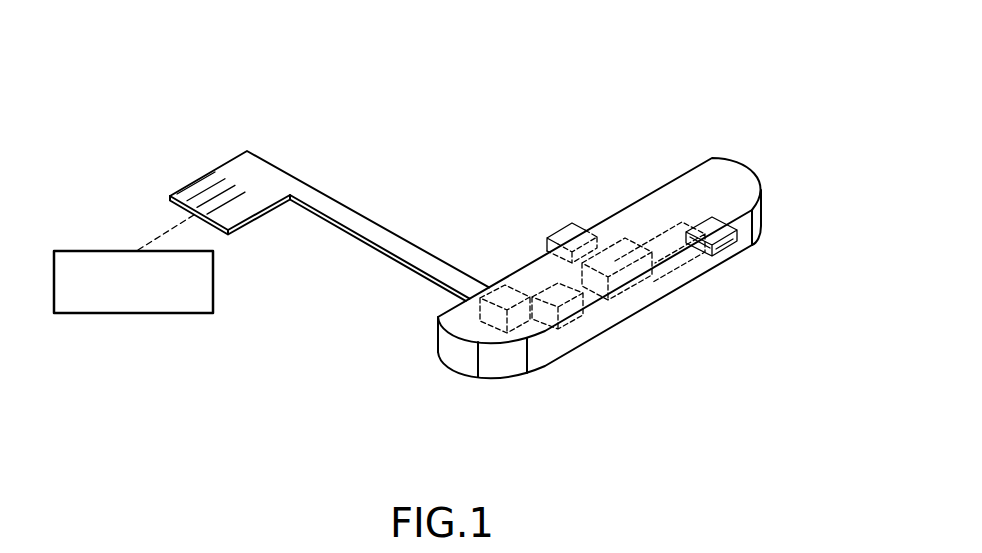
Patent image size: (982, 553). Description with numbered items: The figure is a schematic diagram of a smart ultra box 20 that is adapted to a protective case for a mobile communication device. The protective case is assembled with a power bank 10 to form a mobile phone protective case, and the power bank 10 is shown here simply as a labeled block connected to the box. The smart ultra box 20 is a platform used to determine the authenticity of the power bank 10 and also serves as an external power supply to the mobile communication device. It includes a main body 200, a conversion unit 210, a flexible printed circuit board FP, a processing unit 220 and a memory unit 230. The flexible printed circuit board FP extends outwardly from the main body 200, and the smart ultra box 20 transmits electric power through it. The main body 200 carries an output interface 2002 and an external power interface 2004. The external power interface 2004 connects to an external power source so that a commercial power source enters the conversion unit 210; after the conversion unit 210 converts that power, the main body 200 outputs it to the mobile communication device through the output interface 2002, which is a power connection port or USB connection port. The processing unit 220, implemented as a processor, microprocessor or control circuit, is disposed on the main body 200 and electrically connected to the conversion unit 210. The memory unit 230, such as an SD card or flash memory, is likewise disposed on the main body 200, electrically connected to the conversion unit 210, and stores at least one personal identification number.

The smart ultra box 20 is at (748, 68).
The power bank 10 is at (135, 315).
The flexible printed circuit board FP is at (267, 178).
The main body 200 is at (653, 212).
The output interface 2002 is at (560, 236).
The external power interface 2004 is at (731, 245).
The conversion unit 210 is at (643, 286).
The processing unit 220 is at (583, 315).
The memory unit 230 is at (490, 321).